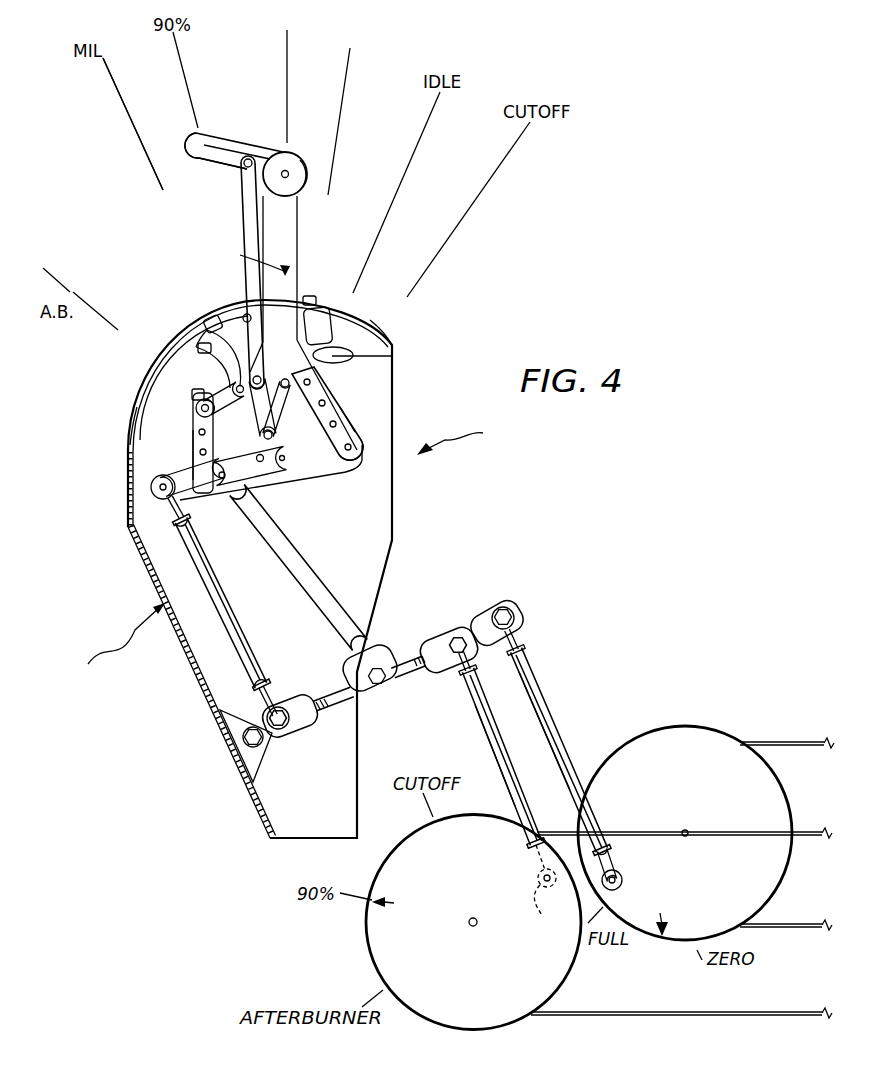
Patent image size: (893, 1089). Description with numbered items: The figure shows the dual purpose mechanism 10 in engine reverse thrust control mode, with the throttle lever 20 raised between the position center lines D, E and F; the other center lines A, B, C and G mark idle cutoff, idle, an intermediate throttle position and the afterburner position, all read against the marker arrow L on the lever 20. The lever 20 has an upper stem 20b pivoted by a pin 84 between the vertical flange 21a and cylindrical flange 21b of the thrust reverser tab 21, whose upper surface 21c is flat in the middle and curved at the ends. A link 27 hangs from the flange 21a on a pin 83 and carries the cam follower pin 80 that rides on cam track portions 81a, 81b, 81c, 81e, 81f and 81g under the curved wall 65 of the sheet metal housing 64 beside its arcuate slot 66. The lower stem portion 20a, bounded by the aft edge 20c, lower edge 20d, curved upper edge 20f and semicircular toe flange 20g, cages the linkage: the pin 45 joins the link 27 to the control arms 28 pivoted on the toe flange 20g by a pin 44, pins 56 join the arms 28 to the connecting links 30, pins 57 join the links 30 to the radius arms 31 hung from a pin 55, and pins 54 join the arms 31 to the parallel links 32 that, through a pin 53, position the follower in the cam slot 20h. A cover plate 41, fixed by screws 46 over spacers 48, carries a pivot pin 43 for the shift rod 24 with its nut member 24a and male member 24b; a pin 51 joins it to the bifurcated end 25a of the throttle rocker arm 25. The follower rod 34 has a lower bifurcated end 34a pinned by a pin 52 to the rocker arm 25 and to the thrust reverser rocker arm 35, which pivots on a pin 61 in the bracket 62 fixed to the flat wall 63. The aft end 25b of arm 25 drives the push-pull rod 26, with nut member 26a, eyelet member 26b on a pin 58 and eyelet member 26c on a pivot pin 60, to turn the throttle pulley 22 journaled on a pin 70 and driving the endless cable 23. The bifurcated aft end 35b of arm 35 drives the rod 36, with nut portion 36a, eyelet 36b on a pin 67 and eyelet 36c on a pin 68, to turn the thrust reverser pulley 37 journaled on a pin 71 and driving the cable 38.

The mechanism 10 is at (471, 435).
The throttle lever 20 is at (287, 240).
The lower stem portion 20a is at (392, 490).
The upper stem 20b is at (297, 262).
The aft edge 20c is at (390, 372).
The lower edge 20d is at (330, 478).
The upper edge 20f is at (193, 437).
The toe flange 20g is at (147, 393).
The cam slot 20h is at (345, 465).
The thrust reverser tab 21 is at (246, 135).
The vertical flange 21a is at (212, 168).
The cylindrical flange 21b is at (307, 182).
The upper surface 21c is at (198, 133).
The throttle pulley 22 is at (503, 1013).
The endless cable 23 is at (598, 1013).
The throttle shift rod 24 is at (237, 617).
The female nut member 24a is at (247, 650).
The male member 24b is at (275, 700).
The throttle rocker arm 25 is at (443, 637).
The bifurcated end portion 25a is at (322, 712).
The aft end 25b is at (442, 632).
The throttle push-pull rod 26 is at (493, 747).
The female nut member 26a is at (500, 774).
The male eyelet member 26b is at (476, 678).
The male eyelet member 26c is at (537, 878).
The link 27 is at (241, 232).
The control arms 28 is at (200, 427).
The connecting links 30 is at (334, 418).
The radius arms 31 is at (315, 388).
The parallel links 32 is at (265, 478).
The follower rod 34 is at (303, 578).
The bifurcated lower end 34a is at (370, 640).
The thrust reverser rocker arm 35 is at (492, 606).
The bifurcated aft end 35b is at (276, 737).
The thrust reverser push-pull rod 36 is at (535, 685).
The female nut portion 36a is at (547, 713).
The male eyelet member 36b is at (520, 645).
The male eyelet member 36c is at (612, 866).
The thrust reverser control pulley 37 is at (667, 738).
The endless cable 38 is at (770, 742).
The cover plate 41 is at (147, 513).
The pivot pin 43 is at (150, 490).
The pin 44 is at (196, 407).
The pin 45 is at (232, 386).
The screws 46 is at (378, 446).
The spacers 48 is at (363, 423).
The pin 51 is at (283, 735).
The pin 52 is at (388, 688).
The pin 53 is at (198, 455).
The pin 54 is at (295, 467).
The pin 55 is at (262, 377).
The pin 56 is at (203, 347).
The pin 57 is at (274, 436).
The pin 58 is at (455, 660).
The pivot pin 60 is at (544, 905).
The pivot pin 61 is at (243, 738).
The support bracket 62 is at (240, 760).
The flat wall 63 is at (192, 668).
The housing 64 is at (110, 646).
The cylindrical wall 65 is at (243, 307).
The arcuate slot 66 is at (388, 312).
The pin 67 is at (513, 618).
The pin 68 is at (629, 878).
The pin 70 is at (477, 918).
The pin 71 is at (688, 831).
The cam follower pin 80 is at (245, 312).
The stop 81a is at (352, 350).
The stop 81b is at (330, 318).
The notched track portion 81c is at (313, 300).
The arcuate cam track portion 81e is at (213, 322).
The cam ramp portion 81f is at (198, 348).
The stop 81g is at (192, 393).
The pin 83 is at (248, 158).
The pin 84 is at (286, 170).
The center line A is at (493, 172).
The center line B is at (423, 125).
The center line C is at (345, 85).
The center line D is at (289, 60).
The center line E is at (183, 70).
The center line F is at (127, 105).
The center line G is at (75, 296).
The marker arrow L is at (240, 255).